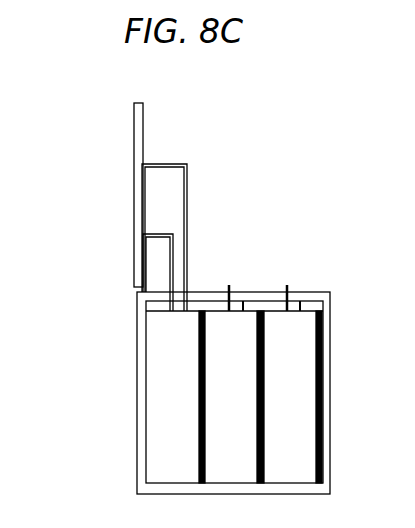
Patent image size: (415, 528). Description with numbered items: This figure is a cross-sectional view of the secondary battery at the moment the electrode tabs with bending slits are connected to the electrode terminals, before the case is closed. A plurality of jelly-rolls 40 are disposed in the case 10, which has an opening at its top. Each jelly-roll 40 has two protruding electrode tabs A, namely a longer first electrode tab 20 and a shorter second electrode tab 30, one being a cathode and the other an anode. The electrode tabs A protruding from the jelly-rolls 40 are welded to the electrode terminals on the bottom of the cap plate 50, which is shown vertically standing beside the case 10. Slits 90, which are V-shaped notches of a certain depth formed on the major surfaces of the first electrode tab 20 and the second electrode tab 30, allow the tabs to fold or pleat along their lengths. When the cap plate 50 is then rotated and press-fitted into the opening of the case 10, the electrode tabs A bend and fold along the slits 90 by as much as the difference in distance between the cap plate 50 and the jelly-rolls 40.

The case 10 is at (342, 385).
The first electrode tab 20 is at (178, 249).
The second electrode tab 30 is at (166, 276).
The jelly-roll 40 is at (235, 422).
The cap plate 50 is at (130, 193).
The slit 90 is at (182, 228).
The electrode tab A is at (148, 203).